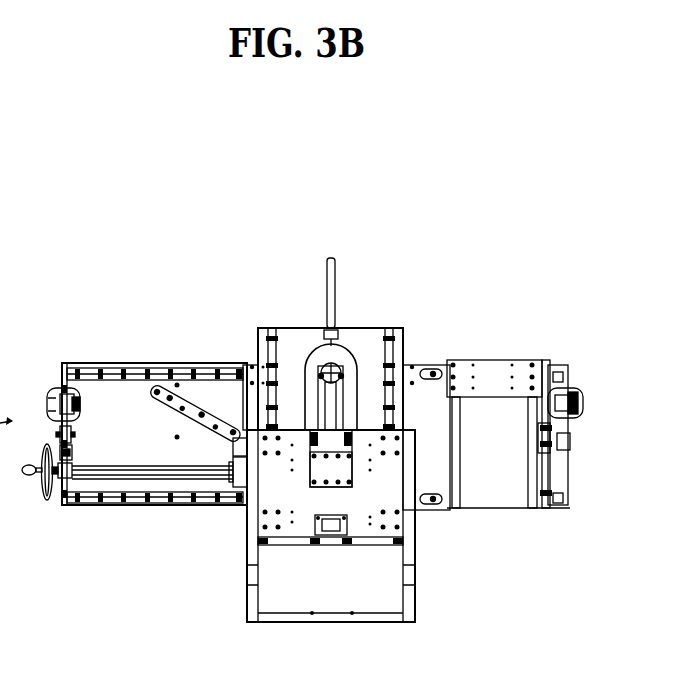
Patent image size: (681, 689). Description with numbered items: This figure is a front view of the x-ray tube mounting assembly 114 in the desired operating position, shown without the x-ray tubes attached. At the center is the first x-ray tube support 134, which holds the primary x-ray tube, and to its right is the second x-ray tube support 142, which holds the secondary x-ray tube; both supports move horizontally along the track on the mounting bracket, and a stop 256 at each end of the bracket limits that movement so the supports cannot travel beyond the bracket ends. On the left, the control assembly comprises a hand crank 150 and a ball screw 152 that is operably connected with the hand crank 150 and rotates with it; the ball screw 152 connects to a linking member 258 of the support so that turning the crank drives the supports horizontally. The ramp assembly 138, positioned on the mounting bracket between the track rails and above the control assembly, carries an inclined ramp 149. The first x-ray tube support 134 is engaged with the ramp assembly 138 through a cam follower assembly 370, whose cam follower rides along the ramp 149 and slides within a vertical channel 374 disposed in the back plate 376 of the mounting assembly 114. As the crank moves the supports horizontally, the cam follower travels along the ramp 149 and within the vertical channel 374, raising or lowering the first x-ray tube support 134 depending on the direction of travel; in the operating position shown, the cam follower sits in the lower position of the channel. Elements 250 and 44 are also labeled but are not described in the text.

The stop 256 is at (42, 401).
The bearing block 250 is at (37, 444).
The hand crank 150 is at (48, 502).
The handle 44 is at (22, 485).
The ball screw 152 is at (88, 474).
The ramp 149 is at (200, 425).
The ramp assembly 138 is at (225, 440).
The linking member 258 is at (236, 500).
The vertical channel 374 is at (320, 392).
The cam follower assembly 370 is at (354, 401).
The back plate 376 is at (424, 400).
The second x-ray tube support 142 is at (492, 412).
The x-ray tube mounting assembly 114 is at (430, 530).
The first x-ray tube support 134 is at (400, 540).